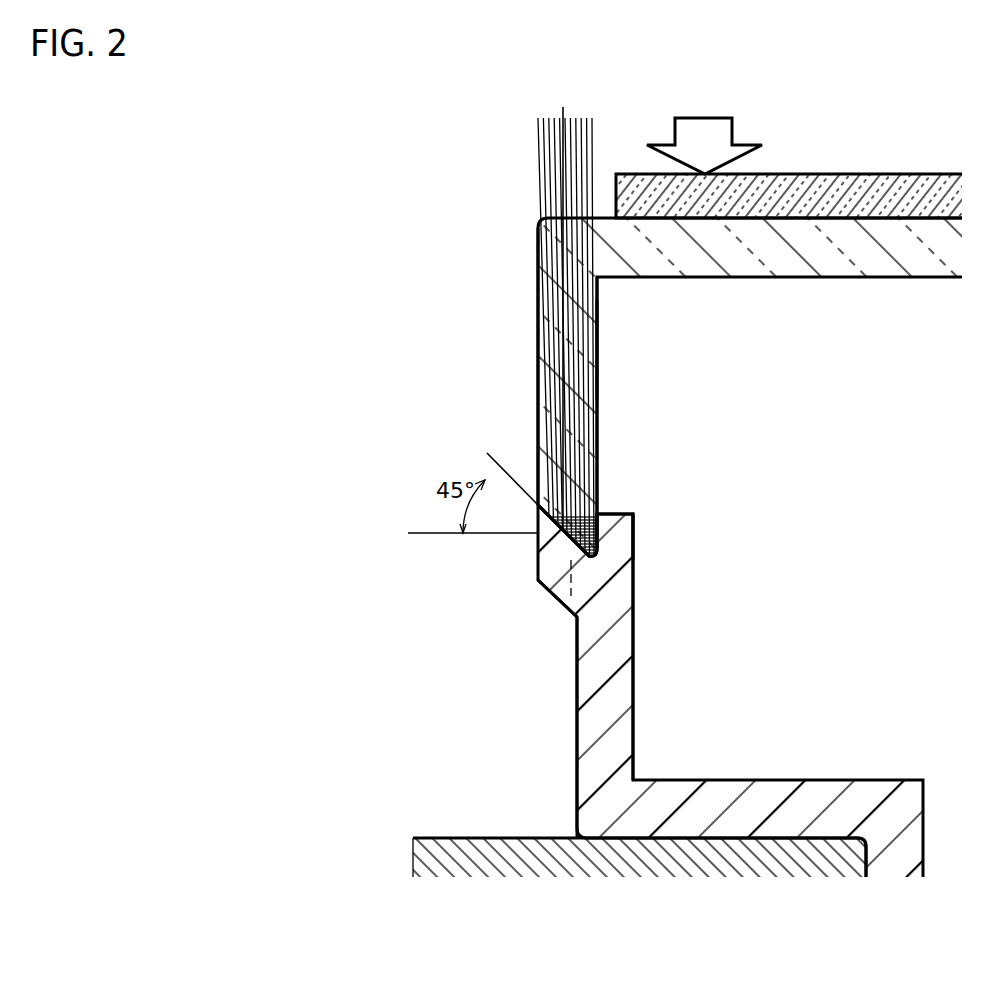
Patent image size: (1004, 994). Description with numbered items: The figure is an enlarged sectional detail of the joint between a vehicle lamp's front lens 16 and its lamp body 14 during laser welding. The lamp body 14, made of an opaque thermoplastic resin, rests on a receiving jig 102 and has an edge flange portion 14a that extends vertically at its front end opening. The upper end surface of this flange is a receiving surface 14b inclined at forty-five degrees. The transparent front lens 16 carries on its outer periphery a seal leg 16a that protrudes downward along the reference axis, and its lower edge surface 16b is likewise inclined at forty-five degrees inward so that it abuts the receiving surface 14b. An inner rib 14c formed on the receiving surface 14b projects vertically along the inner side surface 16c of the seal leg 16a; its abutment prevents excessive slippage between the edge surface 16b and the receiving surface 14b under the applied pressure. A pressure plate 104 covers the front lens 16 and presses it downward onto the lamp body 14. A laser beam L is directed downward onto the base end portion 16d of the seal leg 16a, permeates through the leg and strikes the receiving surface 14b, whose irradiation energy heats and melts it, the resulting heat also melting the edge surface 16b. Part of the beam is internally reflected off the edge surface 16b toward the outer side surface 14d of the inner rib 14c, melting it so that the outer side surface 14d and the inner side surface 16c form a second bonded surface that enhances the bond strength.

The receiving jig 102 is at (492, 836).
The pressure plate 104 is at (816, 172).
The lamp body 14 is at (730, 671).
The edge flange portion 14a is at (638, 710).
The end surface (receiving surface) 14b is at (556, 524).
The inner rib 14c is at (634, 543).
The outer side surface of inner rib 14d is at (572, 552).
The front lens 16 is at (681, 394).
The seal leg 16a is at (689, 424).
The edge surface 16b is at (575, 540).
The inner side surface 16c is at (597, 350).
The base end portion 16d is at (570, 255).
The laser beam L is at (555, 173).